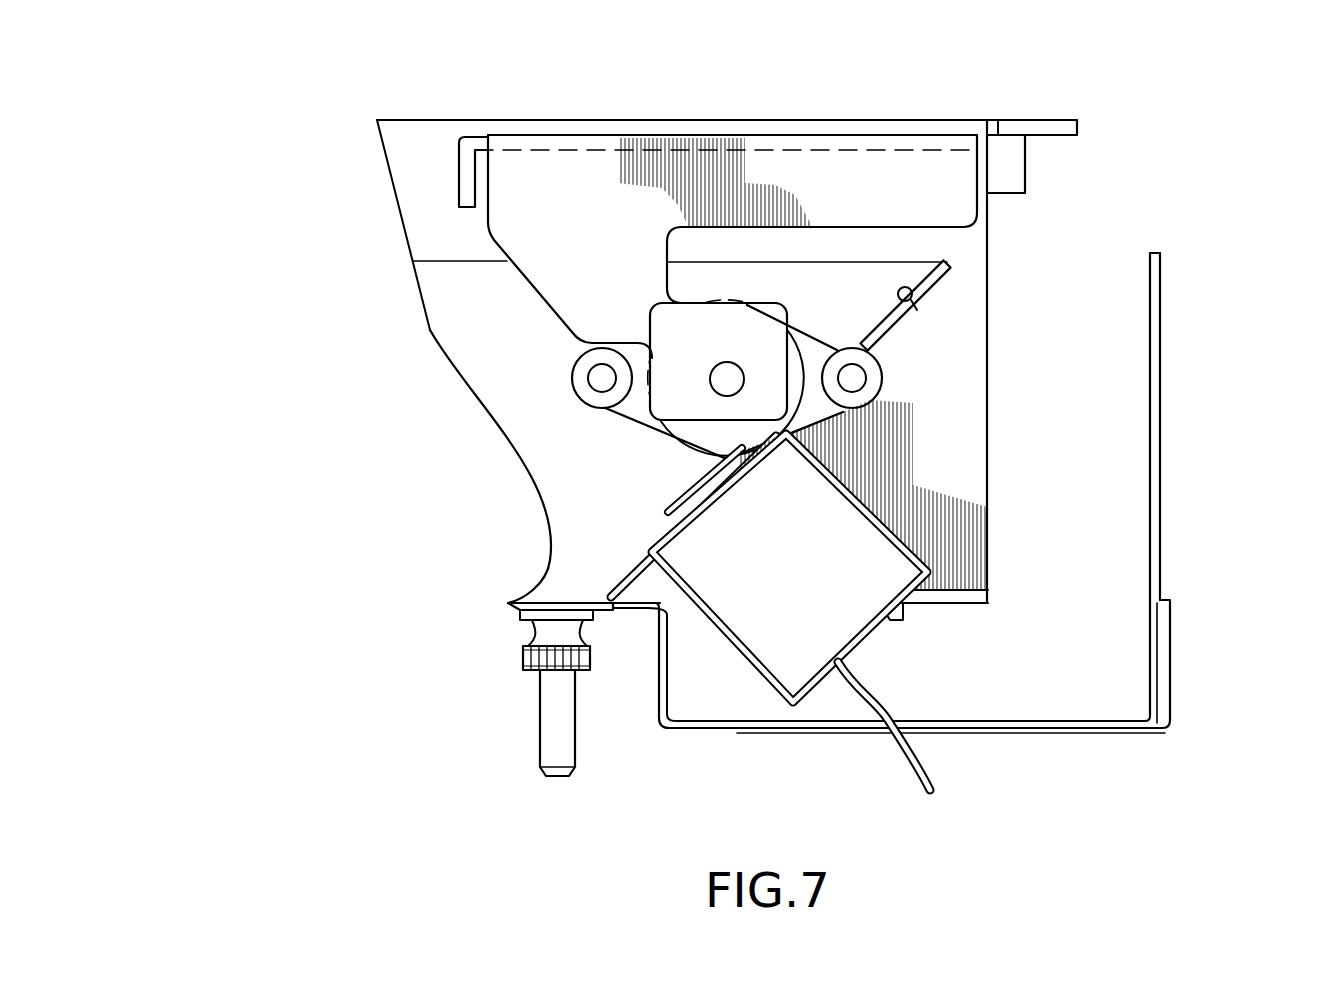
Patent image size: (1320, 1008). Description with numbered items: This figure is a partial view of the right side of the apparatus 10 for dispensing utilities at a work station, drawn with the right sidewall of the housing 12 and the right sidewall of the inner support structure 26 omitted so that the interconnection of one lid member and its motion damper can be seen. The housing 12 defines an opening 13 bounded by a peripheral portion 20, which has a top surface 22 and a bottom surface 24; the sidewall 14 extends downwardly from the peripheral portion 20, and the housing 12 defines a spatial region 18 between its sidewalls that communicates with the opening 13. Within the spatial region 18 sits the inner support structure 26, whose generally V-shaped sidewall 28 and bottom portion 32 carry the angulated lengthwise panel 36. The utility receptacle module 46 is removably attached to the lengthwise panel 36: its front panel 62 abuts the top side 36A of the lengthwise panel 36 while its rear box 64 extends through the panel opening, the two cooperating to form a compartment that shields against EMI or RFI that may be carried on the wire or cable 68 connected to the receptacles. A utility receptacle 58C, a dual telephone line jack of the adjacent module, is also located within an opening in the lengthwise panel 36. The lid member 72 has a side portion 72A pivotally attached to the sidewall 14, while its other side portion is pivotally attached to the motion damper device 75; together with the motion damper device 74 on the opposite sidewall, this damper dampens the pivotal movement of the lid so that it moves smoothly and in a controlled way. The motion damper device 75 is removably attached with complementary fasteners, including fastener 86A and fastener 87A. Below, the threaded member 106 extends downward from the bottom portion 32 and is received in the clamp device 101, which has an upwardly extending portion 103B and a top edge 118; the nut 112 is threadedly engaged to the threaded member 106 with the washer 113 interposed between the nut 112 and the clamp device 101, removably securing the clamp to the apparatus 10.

The apparatus 10 is at (215, 133).
The housing 12 is at (726, 120).
The opening 13 is at (395, 132).
The sidewall 14 is at (412, 200).
The spatial region 18 is at (928, 245).
The peripheral portion 20 is at (1070, 120).
The top surface 22 is at (1018, 120).
The bottom surface 24 is at (1070, 135).
The inner support structure 26 is at (462, 261).
The sidewall 28 is at (470, 325).
The bottom portion 32 is at (565, 603).
The lengthwise panel 36 is at (938, 285).
The top side 36A is at (910, 307).
The utility receptacle module 46 is at (858, 497).
The utility receptacle 58C is at (668, 512).
The front panel 62 is at (650, 552).
The rear box 64 is at (870, 640).
The wire or cable 68 is at (900, 767).
The lid member 72 is at (473, 138).
The side portion 72A is at (540, 187).
The motion damper device 74 is at (823, 340).
The motion damper device 75 is at (633, 427).
The fastener 86A is at (580, 387).
The fastener 87A is at (883, 390).
The clamp device 101 is at (1160, 505).
The upwardly extending portion 103B is at (1153, 412).
The threaded member 106 is at (538, 757).
The nut 112 is at (527, 668).
The washer 113 is at (527, 617).
The top edge 118 is at (1152, 253).